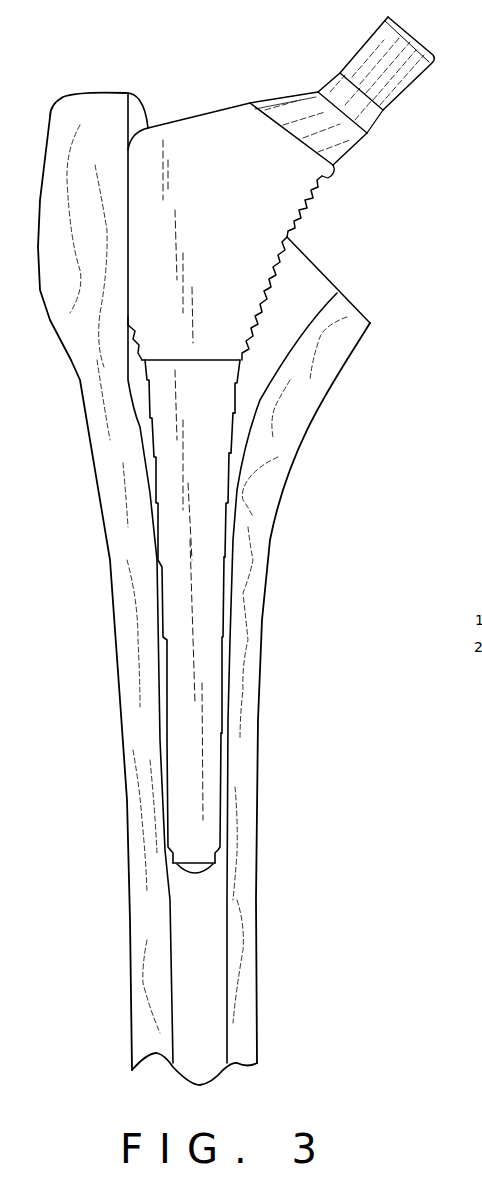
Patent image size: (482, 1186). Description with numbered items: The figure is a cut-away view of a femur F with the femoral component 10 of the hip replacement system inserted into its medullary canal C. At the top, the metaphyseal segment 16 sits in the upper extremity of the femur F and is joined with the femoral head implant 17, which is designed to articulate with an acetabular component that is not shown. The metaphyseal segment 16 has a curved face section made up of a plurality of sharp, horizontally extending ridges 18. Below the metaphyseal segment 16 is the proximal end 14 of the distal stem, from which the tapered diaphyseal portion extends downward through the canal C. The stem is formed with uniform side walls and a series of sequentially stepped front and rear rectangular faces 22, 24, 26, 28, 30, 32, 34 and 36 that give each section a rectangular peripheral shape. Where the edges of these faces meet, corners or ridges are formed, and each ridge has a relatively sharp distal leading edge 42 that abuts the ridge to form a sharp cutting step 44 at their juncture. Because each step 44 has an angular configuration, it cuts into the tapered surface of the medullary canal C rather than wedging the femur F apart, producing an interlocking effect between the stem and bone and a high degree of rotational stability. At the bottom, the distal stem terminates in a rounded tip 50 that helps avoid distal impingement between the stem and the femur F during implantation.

The femoral component 10 is at (253, 472).
The proximal end 14 is at (140, 373).
The metaphyseal segment 16 is at (214, 148).
The femoral head implant 17 is at (398, 63).
The sharp horizontally extending ridges 18 is at (318, 190).
The side wall / rectangular face 22 is at (217, 380).
The rectangular face 24 is at (157, 398).
The rectangular face 26 is at (158, 428).
The rectangular face 28 is at (213, 480).
The rectangular face 30 is at (173, 535).
The rectangular face 32 is at (210, 593).
The rectangular face 34 is at (173, 658).
The rectangular face 36 is at (193, 810).
The leading edge 42 is at (263, 392).
The sharp cutting steps 44 is at (233, 413).
The rounded tip 50 is at (183, 870).
The femur F is at (330, 345).
The femoral medullary canal C is at (197, 923).